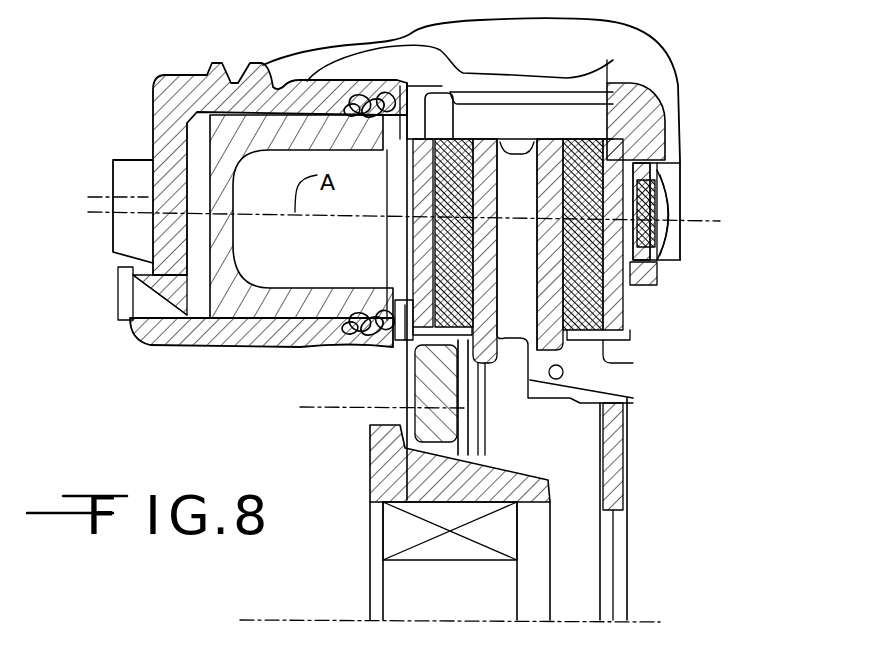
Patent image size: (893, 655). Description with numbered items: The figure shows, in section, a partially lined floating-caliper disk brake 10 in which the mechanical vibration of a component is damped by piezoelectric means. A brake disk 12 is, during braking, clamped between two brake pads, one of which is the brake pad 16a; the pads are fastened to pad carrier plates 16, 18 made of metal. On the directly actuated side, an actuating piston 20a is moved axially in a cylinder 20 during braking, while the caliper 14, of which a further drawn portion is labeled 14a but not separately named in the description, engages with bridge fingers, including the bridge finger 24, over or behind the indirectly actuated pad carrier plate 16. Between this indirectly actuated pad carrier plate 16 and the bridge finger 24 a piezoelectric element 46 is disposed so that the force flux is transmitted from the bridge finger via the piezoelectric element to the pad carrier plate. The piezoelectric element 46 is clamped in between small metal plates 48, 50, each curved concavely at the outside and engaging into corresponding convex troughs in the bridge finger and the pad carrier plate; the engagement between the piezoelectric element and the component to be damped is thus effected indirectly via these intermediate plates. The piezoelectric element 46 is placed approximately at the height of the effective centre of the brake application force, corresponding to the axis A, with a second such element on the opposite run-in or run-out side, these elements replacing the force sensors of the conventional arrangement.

The partially lined floating-caliper disk brake 10 is at (662, 85).
The brake disk 12 is at (516, 160).
The caliper 14 is at (577, 88).
The housing tube 14a is at (412, 392).
The pad carrier plate 16 is at (620, 320).
The brake pad 16a is at (605, 353).
The pad carrier plate 18 is at (422, 130).
The cylinder 20 is at (270, 340).
The actuating piston 20a is at (250, 277).
The bridge finger 24 is at (657, 266).
The piezoelectric element 46 is at (680, 187).
The small metal plate 48 is at (657, 241).
The small metal plate 50 is at (655, 217).